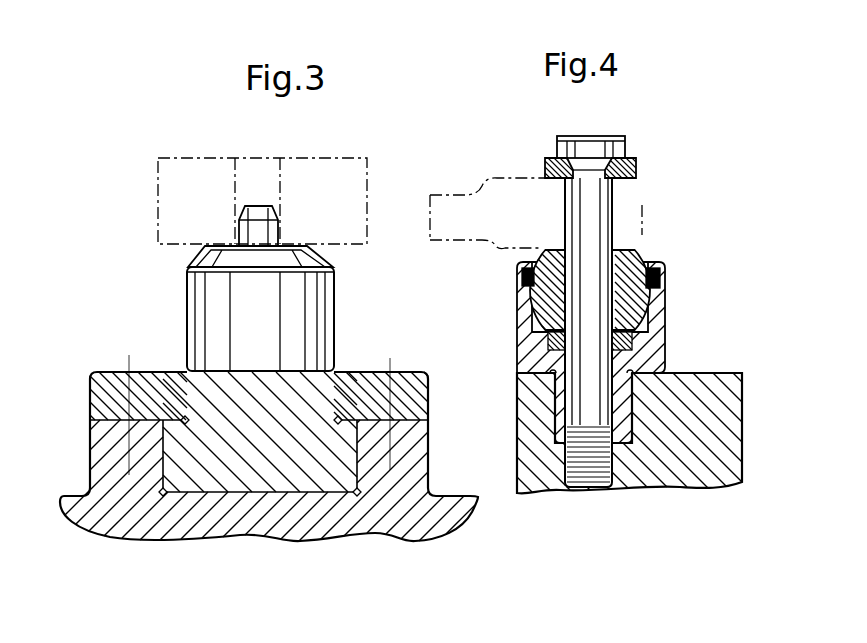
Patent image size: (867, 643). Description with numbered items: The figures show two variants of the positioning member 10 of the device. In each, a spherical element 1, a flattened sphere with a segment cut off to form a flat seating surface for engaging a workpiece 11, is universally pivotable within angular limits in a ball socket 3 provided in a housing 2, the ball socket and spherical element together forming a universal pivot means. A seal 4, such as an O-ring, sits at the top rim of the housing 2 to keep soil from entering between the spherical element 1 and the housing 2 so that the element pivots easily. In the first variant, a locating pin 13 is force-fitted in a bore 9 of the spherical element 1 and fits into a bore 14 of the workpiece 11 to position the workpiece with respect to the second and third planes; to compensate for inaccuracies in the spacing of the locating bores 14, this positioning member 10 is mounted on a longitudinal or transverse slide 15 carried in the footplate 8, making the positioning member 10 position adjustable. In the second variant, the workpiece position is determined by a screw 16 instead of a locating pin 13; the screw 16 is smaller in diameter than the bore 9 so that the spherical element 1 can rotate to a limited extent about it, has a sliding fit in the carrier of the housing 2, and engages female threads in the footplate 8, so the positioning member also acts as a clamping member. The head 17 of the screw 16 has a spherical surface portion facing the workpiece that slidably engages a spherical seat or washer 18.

In FIG. 3, the spherical element 1 is at (216, 248).
In FIG. 4, the spherical element 1 is at (638, 302).
In FIG. 3, the housing 2 is at (322, 314).
In FIG. 4, the housing 2 is at (652, 322).
In FIG. 4, the ball socket 3 is at (630, 348).
In FIG. 4, the seal 4 is at (657, 272).
In FIG. 3, the footplate 8 is at (117, 514).
In FIG. 4, the footplate 8 is at (668, 468).
In FIG. 4, the bore 9 is at (538, 297).
In FIG. 3, the positioning member 10 is at (252, 285).
In FIG. 4, the positioning member 10 is at (587, 336).
In FIG. 3, the workpiece 11 is at (349, 170).
In FIG. 4, the workpiece 11 is at (474, 203).
In FIG. 3, the locating pin 13 is at (268, 231).
In FIG. 3, the bore 14 is at (236, 165).
In FIG. 3, the slide 15 is at (355, 462).
In FIG. 4, the screw 16 is at (598, 212).
In FIG. 4, the head 17 is at (612, 141).
In FIG. 4, the washer 18 is at (548, 160).